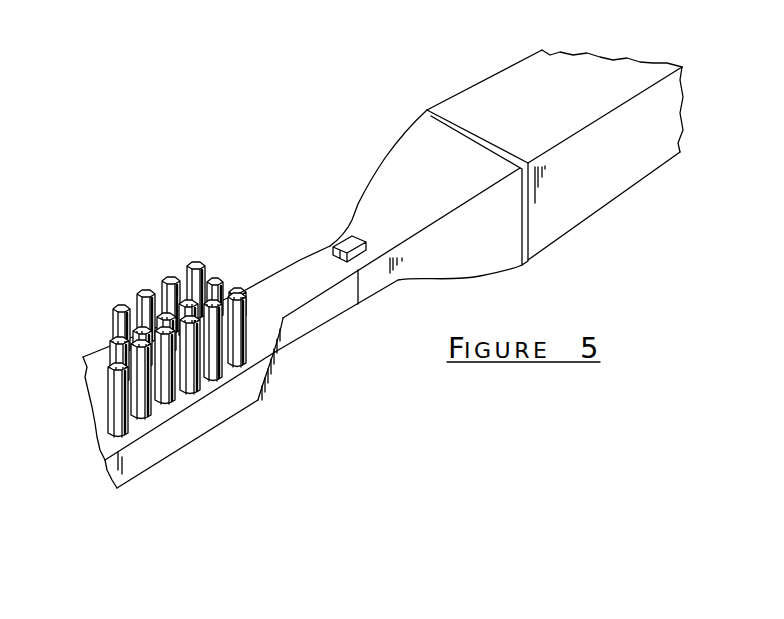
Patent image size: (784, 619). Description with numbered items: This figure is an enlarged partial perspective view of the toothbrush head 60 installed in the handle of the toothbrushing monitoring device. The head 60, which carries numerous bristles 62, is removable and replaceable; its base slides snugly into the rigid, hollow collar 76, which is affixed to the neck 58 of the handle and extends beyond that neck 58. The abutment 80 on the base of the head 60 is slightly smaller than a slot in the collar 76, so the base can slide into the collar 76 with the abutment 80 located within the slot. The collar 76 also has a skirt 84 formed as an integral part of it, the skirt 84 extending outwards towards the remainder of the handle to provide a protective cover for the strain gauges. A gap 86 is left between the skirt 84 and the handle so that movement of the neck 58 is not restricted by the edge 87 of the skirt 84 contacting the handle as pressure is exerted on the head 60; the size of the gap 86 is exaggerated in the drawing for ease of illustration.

The neck 58 is at (497, 93).
The head 60 is at (187, 430).
The bristles 62 is at (117, 308).
The collar 76 is at (377, 278).
The abutment 80 is at (346, 240).
The skirt 84 is at (473, 258).
The gap 86 is at (425, 110).
The edge 87 is at (525, 241).